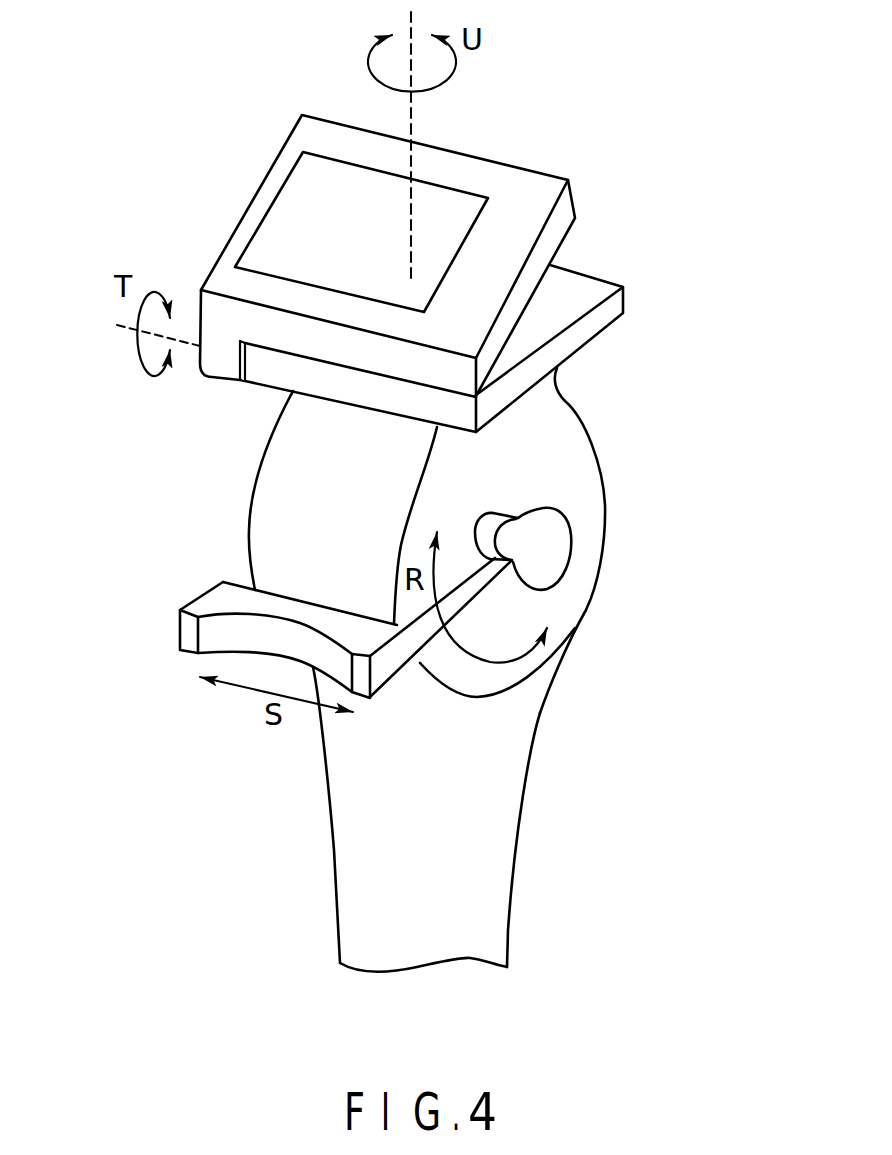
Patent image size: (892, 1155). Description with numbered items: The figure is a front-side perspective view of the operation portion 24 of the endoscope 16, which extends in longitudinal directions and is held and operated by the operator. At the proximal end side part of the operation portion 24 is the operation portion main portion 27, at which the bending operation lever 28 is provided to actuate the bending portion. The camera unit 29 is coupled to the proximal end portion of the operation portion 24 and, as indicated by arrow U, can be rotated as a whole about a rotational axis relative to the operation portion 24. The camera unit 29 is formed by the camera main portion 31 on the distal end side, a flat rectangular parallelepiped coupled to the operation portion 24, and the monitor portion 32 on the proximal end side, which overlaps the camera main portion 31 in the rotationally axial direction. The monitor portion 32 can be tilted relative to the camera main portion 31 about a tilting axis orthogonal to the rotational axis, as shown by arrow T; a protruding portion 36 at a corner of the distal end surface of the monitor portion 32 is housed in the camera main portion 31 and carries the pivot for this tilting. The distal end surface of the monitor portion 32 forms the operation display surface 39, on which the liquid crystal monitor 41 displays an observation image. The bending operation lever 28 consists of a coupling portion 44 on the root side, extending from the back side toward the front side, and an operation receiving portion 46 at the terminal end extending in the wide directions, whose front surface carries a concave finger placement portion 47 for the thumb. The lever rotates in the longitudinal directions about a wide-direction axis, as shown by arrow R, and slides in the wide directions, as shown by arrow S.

The endoscope 16 is at (710, 467).
The operation portion 24 is at (628, 805).
The operation portion main portion 27 is at (583, 638).
The bending operation lever 28 is at (172, 504).
The camera unit 29 is at (170, 178).
The camera main portion 31 is at (590, 328).
The monitor portion 32 is at (573, 207).
The protruding portion 36 is at (220, 363).
The operation display surface 39 is at (521, 184).
The liquid crystal monitor 41 is at (307, 183).
The coupling portion 44 is at (497, 595).
The operation receiving portion 46 is at (212, 603).
The concave finger placement portion 47 is at (238, 636).